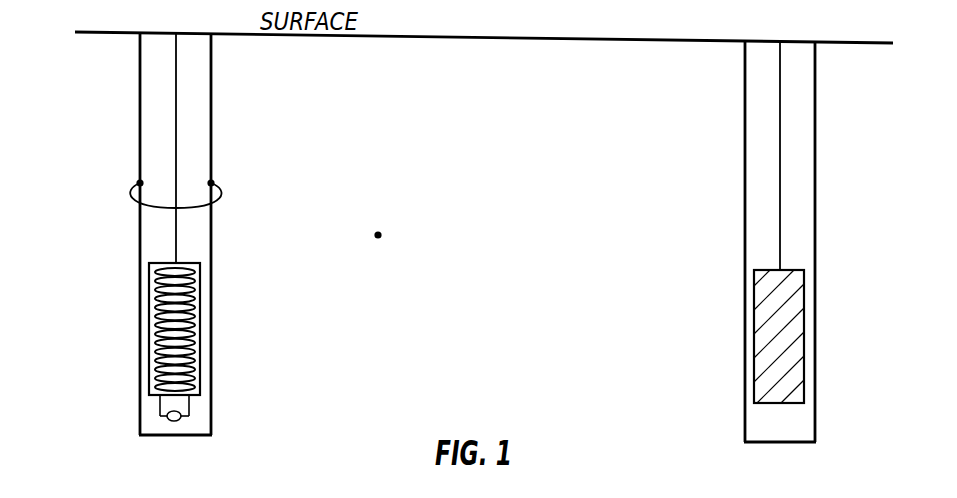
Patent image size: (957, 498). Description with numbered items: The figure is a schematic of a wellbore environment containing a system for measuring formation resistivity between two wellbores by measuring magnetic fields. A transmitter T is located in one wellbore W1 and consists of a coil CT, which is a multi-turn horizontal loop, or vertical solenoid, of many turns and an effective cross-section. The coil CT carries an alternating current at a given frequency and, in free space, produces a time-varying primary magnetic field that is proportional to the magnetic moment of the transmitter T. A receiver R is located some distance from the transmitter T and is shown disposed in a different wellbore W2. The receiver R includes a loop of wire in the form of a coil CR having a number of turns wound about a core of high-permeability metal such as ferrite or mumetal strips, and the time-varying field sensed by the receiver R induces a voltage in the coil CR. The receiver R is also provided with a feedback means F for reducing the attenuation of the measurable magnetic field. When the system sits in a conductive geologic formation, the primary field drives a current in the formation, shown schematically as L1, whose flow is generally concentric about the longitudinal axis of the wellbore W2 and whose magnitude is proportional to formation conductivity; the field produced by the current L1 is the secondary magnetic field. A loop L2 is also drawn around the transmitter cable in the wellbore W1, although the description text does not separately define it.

The wellbore W1 is at (110, 152).
The wellbore W2 is at (852, 148).
The second loop around transmitter cable L2 is at (212, 183).
The current L1 is at (378, 235).
The transmitter T is at (221, 262).
The coil CT is at (200, 315).
The feedback means F is at (181, 416).
The receiver R is at (836, 264).
The coil CR is at (804, 317).